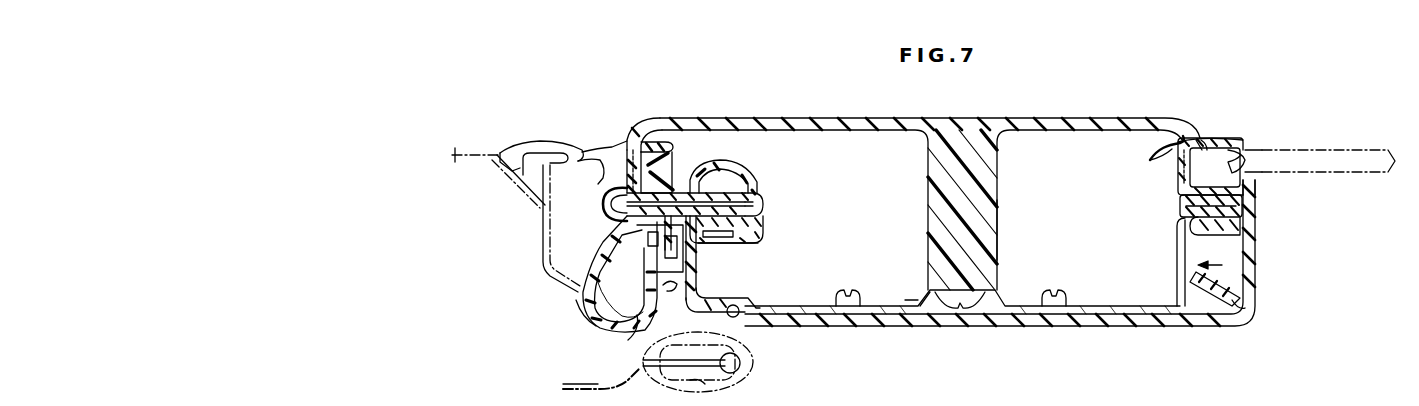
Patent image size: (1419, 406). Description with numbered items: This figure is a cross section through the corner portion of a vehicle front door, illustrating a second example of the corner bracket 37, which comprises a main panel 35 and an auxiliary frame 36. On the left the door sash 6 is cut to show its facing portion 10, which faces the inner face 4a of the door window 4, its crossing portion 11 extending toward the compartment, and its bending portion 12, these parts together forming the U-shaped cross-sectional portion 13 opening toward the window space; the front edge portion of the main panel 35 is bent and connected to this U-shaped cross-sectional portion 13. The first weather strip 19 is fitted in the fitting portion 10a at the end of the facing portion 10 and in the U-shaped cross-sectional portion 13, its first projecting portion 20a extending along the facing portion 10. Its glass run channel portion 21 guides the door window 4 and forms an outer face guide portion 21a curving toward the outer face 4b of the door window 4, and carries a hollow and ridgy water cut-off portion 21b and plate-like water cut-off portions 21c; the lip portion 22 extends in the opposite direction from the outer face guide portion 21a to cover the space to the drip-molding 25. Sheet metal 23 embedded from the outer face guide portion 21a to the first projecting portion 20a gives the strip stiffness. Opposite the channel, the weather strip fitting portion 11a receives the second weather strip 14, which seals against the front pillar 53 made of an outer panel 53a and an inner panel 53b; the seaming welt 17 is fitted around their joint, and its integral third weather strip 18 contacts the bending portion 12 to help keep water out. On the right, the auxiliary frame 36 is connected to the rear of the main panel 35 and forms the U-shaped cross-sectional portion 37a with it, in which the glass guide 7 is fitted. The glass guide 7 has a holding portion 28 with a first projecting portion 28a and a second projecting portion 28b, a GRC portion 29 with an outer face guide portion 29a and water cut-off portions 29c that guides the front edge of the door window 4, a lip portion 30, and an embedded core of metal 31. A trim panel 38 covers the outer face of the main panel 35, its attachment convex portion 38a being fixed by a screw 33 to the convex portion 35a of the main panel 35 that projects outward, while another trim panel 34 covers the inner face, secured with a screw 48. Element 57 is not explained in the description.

The door window 4 is at (1368, 150).
The inner face of the door window 4a is at (1370, 173).
The outer face of the door window 4b is at (1377, 150).
The door sash 6 is at (675, 308).
The glass guide 7 is at (1256, 205).
The facing portion 10 is at (748, 188).
The fitting portion 10a is at (603, 188).
The crossing portion 11 is at (703, 248).
The weather strip fitting portion 11a is at (633, 313).
The bending portion 12 is at (733, 330).
The U-shaped cross-sectional portion 13 is at (740, 240).
The second weather strip 14 is at (577, 307).
The seaming welt 17 is at (720, 377).
The third weather strip 18 is at (743, 327).
The first weather strip 19 is at (770, 225).
The first projecting portion 20a is at (747, 237).
The glass run channel portion 21 is at (645, 140).
The outer face guide portion 21a is at (662, 128).
The hollow and ridgy water cut-off portion 21b is at (743, 178).
The projecting/plate-like water cut-off portions 21c is at (674, 170).
The lip portion 22 is at (592, 141).
The sheet metal 23 is at (763, 200).
The drip-molding 25 is at (530, 142).
The holding portion 28 is at (1257, 242).
The first projecting portion 28a is at (1256, 231).
The second projecting portion 28b is at (1240, 297).
The GRC portion 29 is at (1222, 137).
The outer face guide portion 29a is at (1237, 138).
The water cut-off portions 29c is at (1243, 157).
The lip portion 30 is at (1167, 137).
The core of metal 31 is at (1202, 138).
The screw 33 is at (980, 308).
The trim panel 34 is at (1030, 320).
The main panel 35 is at (1120, 300).
The convex portion 35a is at (935, 308).
The auxiliary frame 36 is at (1177, 243).
The corner bracket 37 is at (1089, 300).
The U-shaped cross-sectional portion 37a is at (1250, 280).
The trim panel 38 is at (1012, 118).
The attachment convex portion 38a is at (990, 207).
The screw 48 is at (857, 295).
The front pillar 53 is at (466, 148).
The outer panel 53a is at (542, 250).
The inner panel 53b is at (640, 363).
The element 57 is at (693, 383).